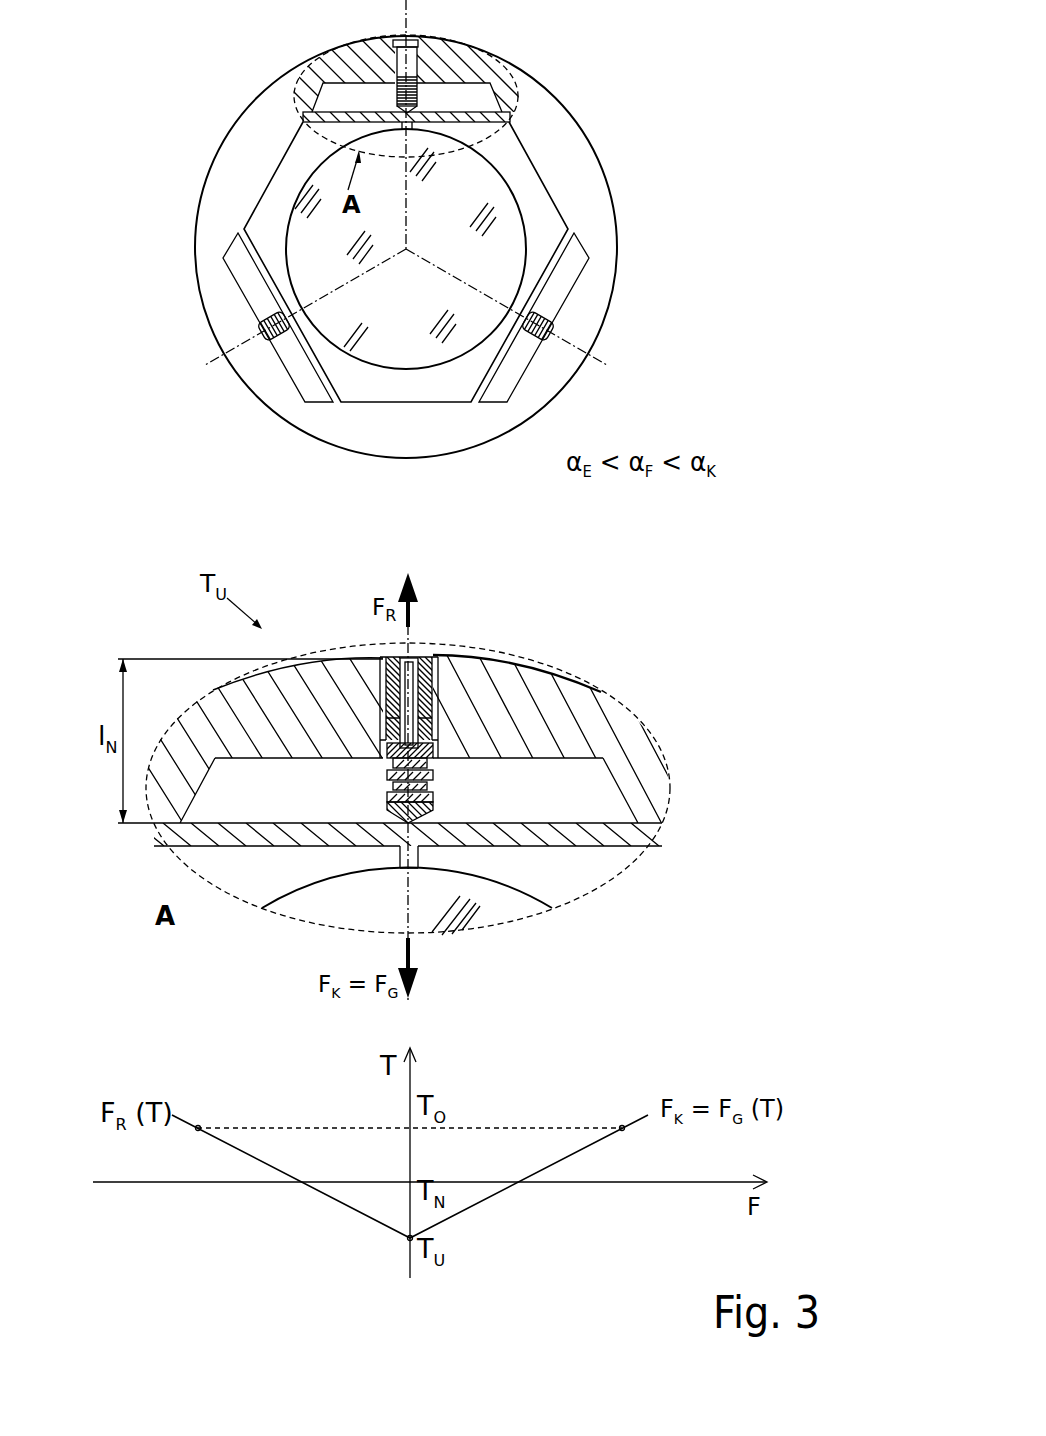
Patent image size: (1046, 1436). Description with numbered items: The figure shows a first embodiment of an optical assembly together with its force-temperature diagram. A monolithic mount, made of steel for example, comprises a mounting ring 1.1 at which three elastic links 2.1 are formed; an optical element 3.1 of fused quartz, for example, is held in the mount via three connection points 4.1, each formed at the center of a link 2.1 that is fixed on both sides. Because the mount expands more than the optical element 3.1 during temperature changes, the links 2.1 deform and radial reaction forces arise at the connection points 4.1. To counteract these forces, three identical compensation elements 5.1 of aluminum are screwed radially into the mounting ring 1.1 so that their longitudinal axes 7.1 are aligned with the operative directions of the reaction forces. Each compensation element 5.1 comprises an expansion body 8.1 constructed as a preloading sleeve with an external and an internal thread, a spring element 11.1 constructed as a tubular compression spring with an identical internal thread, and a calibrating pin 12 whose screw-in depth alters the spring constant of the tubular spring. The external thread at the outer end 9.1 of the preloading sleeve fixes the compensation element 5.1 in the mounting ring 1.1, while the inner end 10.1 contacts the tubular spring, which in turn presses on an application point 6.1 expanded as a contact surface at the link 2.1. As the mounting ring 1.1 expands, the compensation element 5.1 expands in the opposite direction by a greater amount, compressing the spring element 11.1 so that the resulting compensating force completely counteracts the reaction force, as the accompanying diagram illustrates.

The mounting ring 1.1 is at (568, 170).
The elastic link 2.1 is at (547, 287).
The optical element 3.1 is at (505, 230).
The connection point 4.1 is at (518, 337).
The compensation element 5.1 is at (465, 57).
The application point 6.1 is at (425, 852).
The longitudinal axis 7.1 is at (410, 22).
The expansion body 8.1 is at (437, 710).
The outer end 9.1 is at (435, 657).
The inner end 10.1 is at (437, 776).
The spring element 11.1 is at (437, 815).
The calibrating pin 12 is at (437, 690).